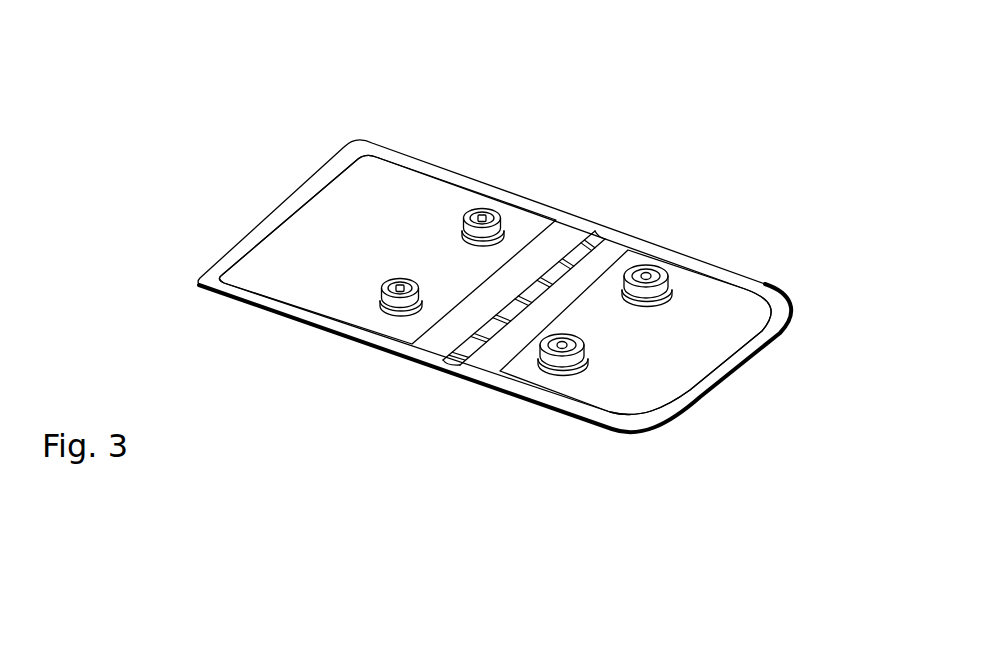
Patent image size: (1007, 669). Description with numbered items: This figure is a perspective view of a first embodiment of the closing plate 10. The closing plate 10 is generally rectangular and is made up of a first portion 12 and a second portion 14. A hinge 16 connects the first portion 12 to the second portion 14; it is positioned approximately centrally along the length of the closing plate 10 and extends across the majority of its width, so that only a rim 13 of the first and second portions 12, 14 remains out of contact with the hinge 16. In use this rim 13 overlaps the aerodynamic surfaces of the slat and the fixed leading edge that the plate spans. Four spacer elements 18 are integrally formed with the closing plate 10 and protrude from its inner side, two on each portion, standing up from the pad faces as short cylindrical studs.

The closing plate 10 is at (622, 80).
The first portion 12 is at (700, 355).
The rim 13 is at (777, 292).
The second portion 14 is at (306, 241).
The hinge 16 is at (495, 337).
The spacer elements 18 is at (482, 216).